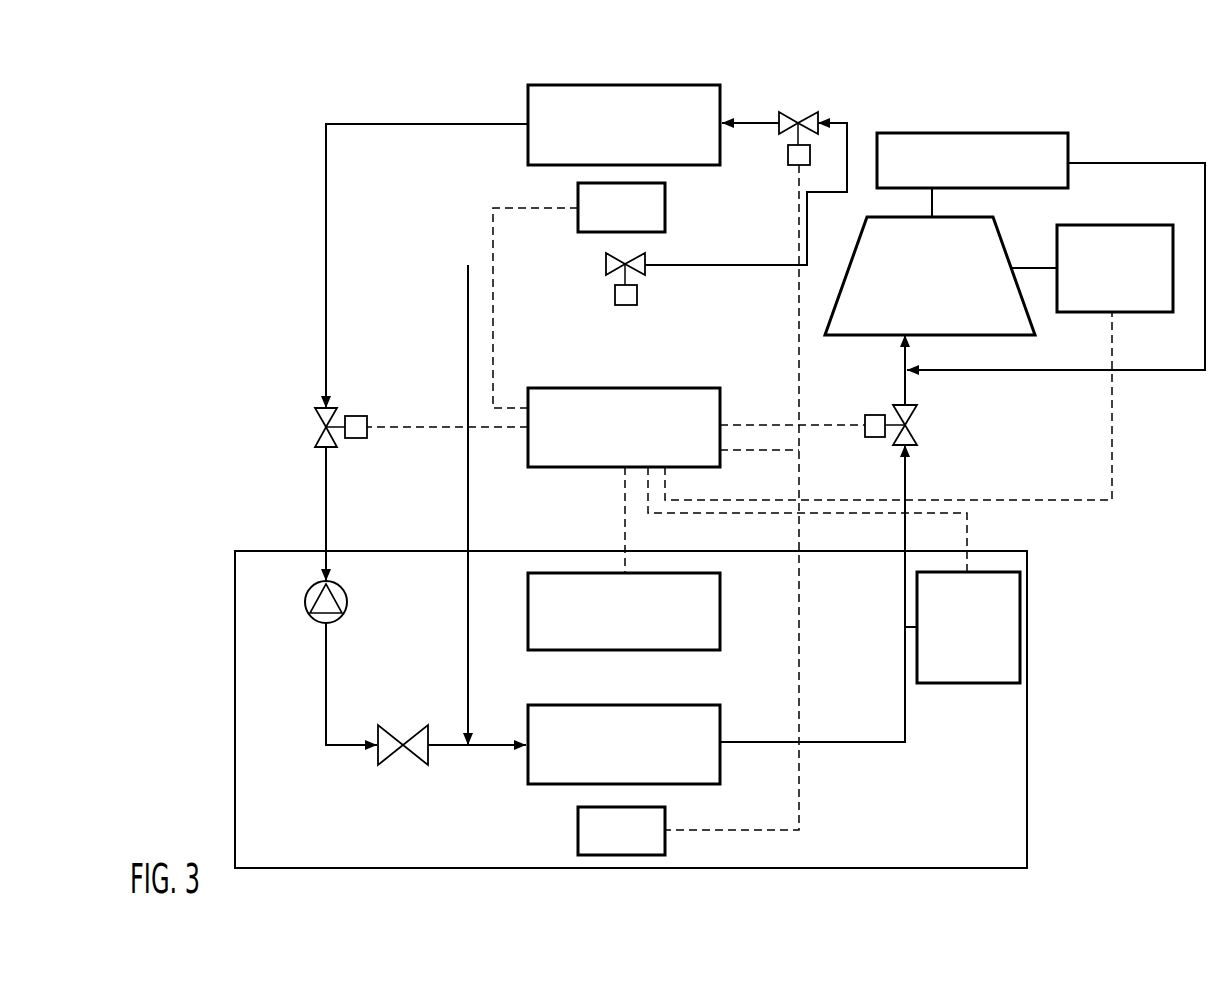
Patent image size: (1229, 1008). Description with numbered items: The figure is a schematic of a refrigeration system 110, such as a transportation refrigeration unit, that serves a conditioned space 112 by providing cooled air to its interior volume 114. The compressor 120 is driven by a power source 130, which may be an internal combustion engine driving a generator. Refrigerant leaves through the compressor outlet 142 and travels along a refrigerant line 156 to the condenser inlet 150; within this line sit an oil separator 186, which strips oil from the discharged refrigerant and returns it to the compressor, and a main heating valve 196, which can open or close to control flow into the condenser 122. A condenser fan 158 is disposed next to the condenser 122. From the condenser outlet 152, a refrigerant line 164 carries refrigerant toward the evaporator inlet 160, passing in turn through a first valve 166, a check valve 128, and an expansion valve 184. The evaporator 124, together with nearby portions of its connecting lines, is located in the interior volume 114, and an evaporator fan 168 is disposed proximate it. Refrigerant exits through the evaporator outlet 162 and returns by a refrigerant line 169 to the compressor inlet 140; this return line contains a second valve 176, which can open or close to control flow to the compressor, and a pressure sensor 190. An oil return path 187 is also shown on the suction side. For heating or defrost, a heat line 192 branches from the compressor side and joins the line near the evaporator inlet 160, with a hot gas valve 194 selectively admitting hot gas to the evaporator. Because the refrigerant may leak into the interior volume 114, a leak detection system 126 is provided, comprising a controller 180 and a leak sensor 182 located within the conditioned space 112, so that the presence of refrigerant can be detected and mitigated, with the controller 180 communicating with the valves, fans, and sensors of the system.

The refrigeration system 110 is at (256, 107).
The conditioned space 112 is at (998, 551).
The interior volume 114 is at (639, 691).
The compressor 120 is at (1037, 328).
The condenser 122 is at (707, 167).
The evaporator 124 is at (528, 768).
The leak detection system 126 is at (380, 376).
The check valve 128 is at (347, 603).
The power source 130 is at (1138, 313).
The compressor inlet 140 is at (909, 346).
The compressor outlet 142 is at (933, 205).
The condenser inlet 150 is at (726, 120).
The condenser outlet 152 is at (526, 124).
The refrigerant line 156 is at (932, 132).
The condenser fan 158 is at (666, 213).
The evaporator inlet 160 is at (518, 745).
The evaporator outlet 162 is at (723, 740).
The refrigerant line 164 is at (325, 293).
The first valve 166 is at (320, 428).
The evaporator fan 168 is at (578, 826).
The refrigerant line 169 is at (910, 728).
The second valve 176 is at (913, 427).
The controller 180 is at (530, 455).
The leak sensor 182 is at (528, 610).
The expansion valve 184 is at (377, 758).
The oil separator 186 is at (1058, 189).
The oil return line 187 is at (1153, 372).
The pressure sensor 190 is at (968, 684).
The heat line 192 is at (757, 267).
The hot gas valve 194 is at (645, 272).
The main heating valve 196 is at (777, 128).